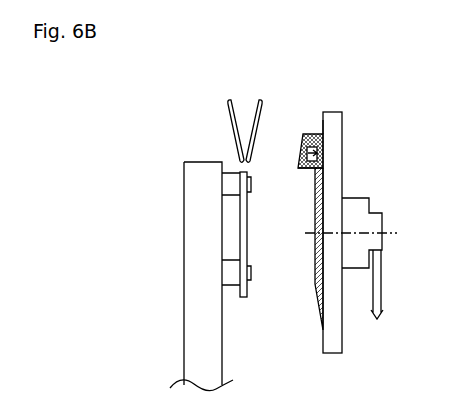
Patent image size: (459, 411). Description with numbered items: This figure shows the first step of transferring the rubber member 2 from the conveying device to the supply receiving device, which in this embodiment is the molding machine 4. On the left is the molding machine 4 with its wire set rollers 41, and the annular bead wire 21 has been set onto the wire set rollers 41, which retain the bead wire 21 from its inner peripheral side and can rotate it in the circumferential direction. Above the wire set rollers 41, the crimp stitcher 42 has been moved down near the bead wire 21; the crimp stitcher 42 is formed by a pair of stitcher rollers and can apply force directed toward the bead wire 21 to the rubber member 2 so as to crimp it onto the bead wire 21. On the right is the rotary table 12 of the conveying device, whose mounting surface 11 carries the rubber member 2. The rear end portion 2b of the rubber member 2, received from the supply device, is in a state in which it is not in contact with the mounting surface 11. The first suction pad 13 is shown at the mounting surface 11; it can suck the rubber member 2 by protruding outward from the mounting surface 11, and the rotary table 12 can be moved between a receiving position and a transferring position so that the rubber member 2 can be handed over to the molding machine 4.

The rubber member 2 is at (316, 285).
The rear end portion 2b is at (300, 152).
The molding machine 4 is at (196, 116).
The mounting surface 11 is at (321, 130).
The rotary table 12 is at (334, 111).
The first suction pad 13 is at (300, 169).
The bead wire 21 is at (241, 298).
The wire set roller 41 is at (251, 186).
The crimp stitcher 42 is at (243, 104).